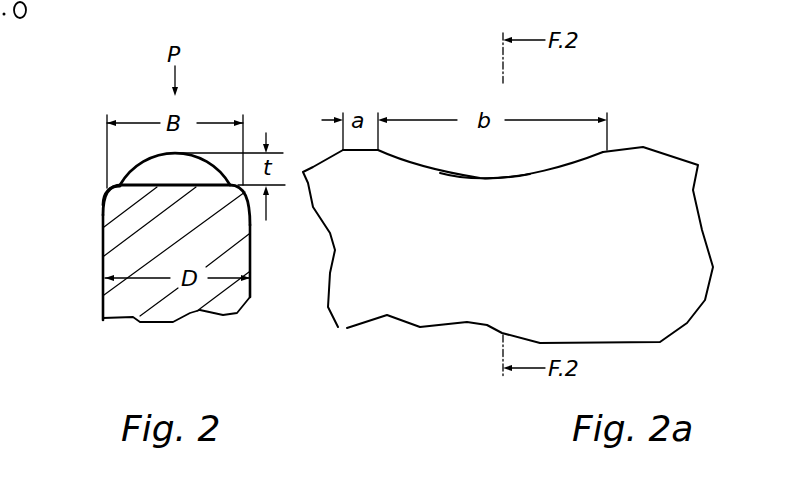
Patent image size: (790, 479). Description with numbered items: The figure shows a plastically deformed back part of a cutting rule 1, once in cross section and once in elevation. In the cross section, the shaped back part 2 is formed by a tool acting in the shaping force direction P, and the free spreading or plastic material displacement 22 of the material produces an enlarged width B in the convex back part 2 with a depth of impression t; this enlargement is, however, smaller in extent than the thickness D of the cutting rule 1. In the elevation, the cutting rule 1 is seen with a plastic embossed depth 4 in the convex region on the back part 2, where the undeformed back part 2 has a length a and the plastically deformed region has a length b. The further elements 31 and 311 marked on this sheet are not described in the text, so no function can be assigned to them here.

In FIG. 2, the core body 1 is at (133, 250).
In FIG. 2A, the core body 1 is at (367, 252).
In FIG. 2, the shell layer 2 is at (157, 197).
In FIG. 2A, the shell layer 2 is at (630, 185).
In FIG. 2, the shell corner edge 22 is at (107, 190).
In FIG. 2A, the concave recess surface 4 is at (512, 166).
In FIG. 2, the support member 31 is at (245, 0).
In FIG. 2, the support protrusion 311 is at (133, 17).